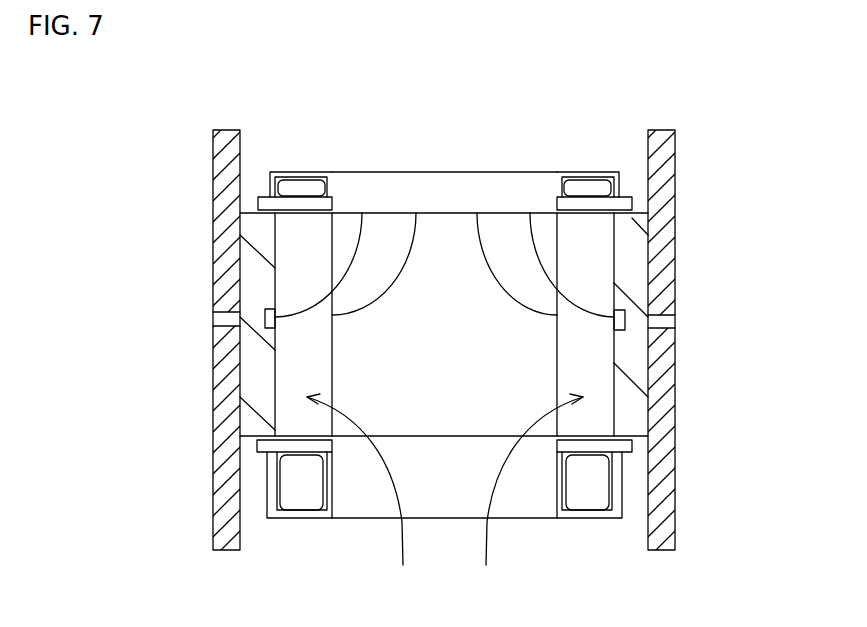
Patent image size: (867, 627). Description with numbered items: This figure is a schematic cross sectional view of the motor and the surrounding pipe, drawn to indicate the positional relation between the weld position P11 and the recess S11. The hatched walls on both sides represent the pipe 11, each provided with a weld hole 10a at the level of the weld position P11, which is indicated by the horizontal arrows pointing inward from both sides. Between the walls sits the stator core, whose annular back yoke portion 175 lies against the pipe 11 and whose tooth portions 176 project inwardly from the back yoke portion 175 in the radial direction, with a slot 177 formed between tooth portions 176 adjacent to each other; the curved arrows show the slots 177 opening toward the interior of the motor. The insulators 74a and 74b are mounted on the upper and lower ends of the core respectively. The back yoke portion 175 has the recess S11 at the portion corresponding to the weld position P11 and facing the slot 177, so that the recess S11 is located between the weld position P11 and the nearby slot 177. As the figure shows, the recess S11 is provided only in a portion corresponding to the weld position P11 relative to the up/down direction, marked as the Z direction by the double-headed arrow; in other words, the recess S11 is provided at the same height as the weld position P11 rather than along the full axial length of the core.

The housing 11 is at (676, 157).
The weld hole 10a is at (676, 322).
The insulator 74a is at (293, 170).
The insulator 74b is at (300, 520).
The back yoke portion 175 is at (630, 355).
The tooth portion 176 is at (477, 213).
The slot 177 is at (445, 496).
The recess S11 is at (530, 213).
The weld position P11 is at (158, 309).
The Z-direction Z is at (182, 440).